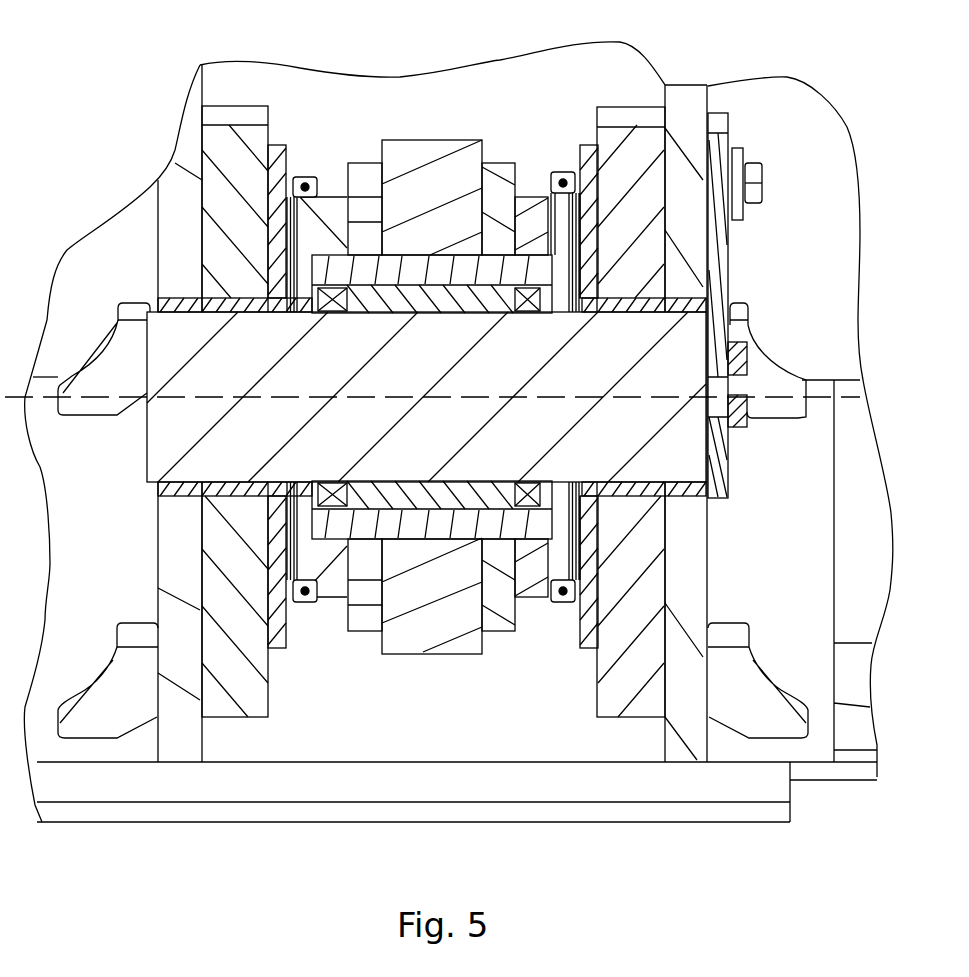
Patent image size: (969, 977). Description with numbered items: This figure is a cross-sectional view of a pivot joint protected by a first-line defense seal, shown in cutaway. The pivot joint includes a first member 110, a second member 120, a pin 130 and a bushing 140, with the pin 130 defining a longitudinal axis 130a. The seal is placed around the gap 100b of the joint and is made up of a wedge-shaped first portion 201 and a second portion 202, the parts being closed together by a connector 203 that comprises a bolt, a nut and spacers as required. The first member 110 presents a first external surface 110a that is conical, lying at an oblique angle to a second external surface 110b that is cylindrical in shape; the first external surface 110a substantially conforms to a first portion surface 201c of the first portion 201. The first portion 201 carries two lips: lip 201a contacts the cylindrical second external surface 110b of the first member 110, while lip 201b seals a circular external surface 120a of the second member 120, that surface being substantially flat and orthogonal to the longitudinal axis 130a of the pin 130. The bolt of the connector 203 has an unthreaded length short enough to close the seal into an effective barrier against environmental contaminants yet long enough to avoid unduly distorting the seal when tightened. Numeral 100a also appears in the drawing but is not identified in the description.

The first end ring 100a is at (283, 260).
The gap 100b is at (585, 257).
The first member 110 is at (372, 145).
The first external surface 110a is at (540, 300).
The second external surface 110b is at (530, 200).
The second member 120 is at (180, 153).
The circular external surface 120a is at (553, 313).
The pin 130 is at (193, 330).
The longitudinal axis 130a is at (128, 390).
The bushing 140 is at (372, 300).
The first portion 201 is at (585, 238).
The lip 201a is at (548, 192).
The lip 201b is at (580, 190).
The first portion surface 201c is at (553, 207).
The second portion 202 is at (568, 172).
The connector 203 is at (555, 170).